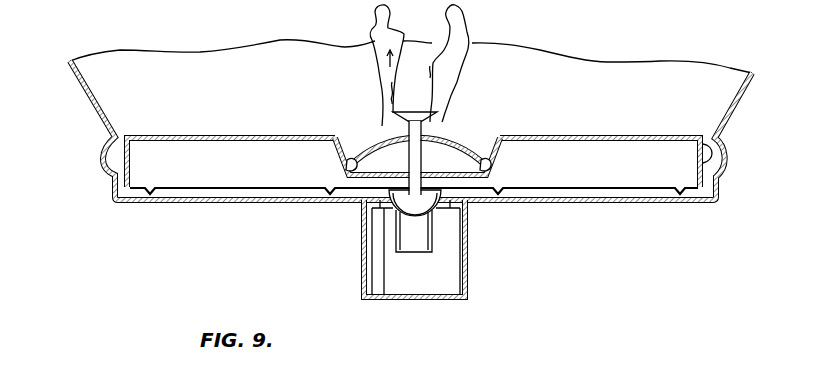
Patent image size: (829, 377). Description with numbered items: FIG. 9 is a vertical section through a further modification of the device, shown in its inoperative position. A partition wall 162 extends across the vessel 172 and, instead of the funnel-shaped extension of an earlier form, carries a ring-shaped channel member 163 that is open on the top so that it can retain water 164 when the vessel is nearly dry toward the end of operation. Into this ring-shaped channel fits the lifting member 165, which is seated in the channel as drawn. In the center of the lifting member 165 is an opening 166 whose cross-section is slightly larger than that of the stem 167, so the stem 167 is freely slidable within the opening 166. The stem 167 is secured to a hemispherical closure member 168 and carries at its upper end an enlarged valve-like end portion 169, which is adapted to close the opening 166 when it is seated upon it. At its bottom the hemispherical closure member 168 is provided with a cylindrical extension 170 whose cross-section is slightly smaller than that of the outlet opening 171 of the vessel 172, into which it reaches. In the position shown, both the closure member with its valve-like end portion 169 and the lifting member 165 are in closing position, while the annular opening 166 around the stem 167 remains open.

The partition wall 162 is at (620, 137).
The ring-shaped channel member 163 is at (503, 153).
The water 164 is at (352, 160).
The lifting member 165 is at (451, 139).
The opening 166 is at (446, 128).
The stem 167 is at (408, 181).
The hemispherical closure member 168 is at (432, 220).
The enlarged valve-like end portion 169 is at (415, 111).
The cylindrical extension 170 is at (418, 242).
The outlet opening 171 is at (393, 207).
The vessel 172 is at (195, 201).